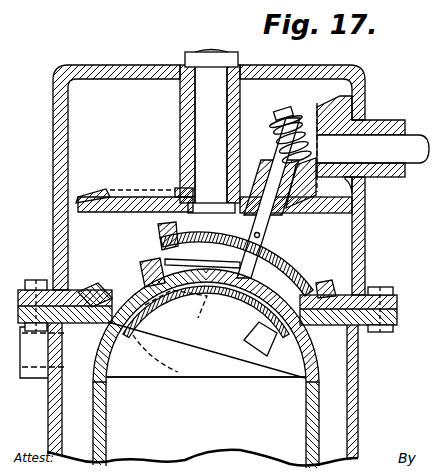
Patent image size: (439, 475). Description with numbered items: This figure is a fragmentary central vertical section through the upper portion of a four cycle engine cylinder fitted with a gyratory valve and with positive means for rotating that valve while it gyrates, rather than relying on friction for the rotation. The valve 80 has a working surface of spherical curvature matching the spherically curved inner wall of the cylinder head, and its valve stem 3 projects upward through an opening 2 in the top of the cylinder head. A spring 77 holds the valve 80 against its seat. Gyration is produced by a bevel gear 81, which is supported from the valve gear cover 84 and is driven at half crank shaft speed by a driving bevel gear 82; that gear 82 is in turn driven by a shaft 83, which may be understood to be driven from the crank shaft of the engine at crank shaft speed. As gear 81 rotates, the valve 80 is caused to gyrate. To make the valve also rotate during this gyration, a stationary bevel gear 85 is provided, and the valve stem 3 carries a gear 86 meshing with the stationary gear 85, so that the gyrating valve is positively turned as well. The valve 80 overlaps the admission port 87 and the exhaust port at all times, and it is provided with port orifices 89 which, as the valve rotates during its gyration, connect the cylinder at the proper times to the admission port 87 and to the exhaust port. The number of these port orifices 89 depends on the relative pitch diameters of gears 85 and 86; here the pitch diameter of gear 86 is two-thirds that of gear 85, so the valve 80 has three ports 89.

The opening 2 is at (240, 263).
The valve stem 3 is at (264, 223).
The spring 77 is at (280, 157).
The valve 80 is at (284, 358).
The bevel gear 81 is at (108, 212).
The driving bevel gear 82 is at (365, 201).
The shaft 83 is at (378, 147).
The valve gear cover 84 is at (69, 143).
The stationary bevel gear 85 is at (367, 332).
The gear 86 is at (300, 273).
The admission port 87 is at (176, 338).
The port orifices 89 is at (260, 341).